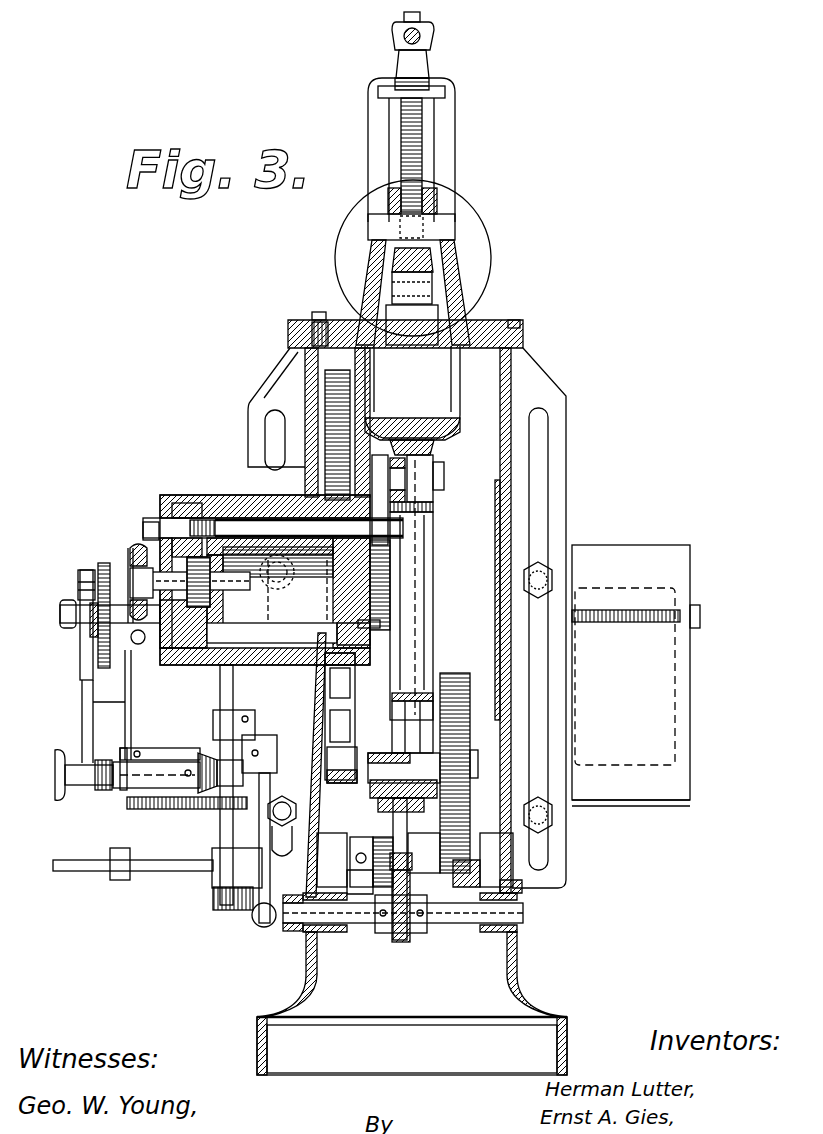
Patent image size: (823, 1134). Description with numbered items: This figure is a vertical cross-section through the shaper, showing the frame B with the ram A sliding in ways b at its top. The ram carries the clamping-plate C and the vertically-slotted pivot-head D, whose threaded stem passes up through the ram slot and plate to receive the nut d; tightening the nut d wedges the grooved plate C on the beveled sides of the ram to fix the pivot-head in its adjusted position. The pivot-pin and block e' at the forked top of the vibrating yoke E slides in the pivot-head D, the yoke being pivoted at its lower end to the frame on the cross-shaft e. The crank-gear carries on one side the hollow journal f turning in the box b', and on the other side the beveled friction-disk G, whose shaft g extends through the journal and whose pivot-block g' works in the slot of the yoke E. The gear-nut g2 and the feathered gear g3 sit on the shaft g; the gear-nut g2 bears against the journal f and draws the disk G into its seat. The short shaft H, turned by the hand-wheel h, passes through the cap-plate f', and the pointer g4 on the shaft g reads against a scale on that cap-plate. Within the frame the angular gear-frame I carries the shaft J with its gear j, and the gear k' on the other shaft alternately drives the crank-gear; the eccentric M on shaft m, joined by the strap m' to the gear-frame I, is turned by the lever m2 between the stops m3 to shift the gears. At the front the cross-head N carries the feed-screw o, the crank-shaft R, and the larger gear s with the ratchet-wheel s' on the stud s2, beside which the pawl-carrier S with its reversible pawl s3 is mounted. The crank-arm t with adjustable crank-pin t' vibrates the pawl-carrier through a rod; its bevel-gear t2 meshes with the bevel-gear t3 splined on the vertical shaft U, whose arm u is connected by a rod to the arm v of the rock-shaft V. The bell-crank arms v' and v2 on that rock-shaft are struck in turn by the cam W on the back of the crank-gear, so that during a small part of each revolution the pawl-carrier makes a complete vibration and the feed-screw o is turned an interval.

The nut d is at (388, 206).
The clamping-plate C is at (450, 216).
The ram A is at (366, 272).
The pivot-head D is at (440, 264).
The pivot-pin and block e' is at (412, 288).
The ways b is at (407, 318).
The frame B is at (285, 990).
The pivot-block g' is at (417, 453).
The shaft g is at (273, 454).
The gear-nut g2 is at (200, 518).
The gear g3 is at (180, 503).
The index or pointer g4 is at (150, 520).
The tubular journal f is at (265, 481).
The vertical shaft U is at (200, 702).
The short shaft H is at (130, 576).
The hand-wheel h is at (134, 548).
The gear k' is at (216, 590).
The box b' is at (287, 762).
The pawl-carrier S is at (80, 588).
The gear s is at (109, 615).
The reversible pawl s3 is at (88, 568).
The stud s2 is at (60, 616).
The ratchet-wheel s' is at (78, 626).
The cross-head N is at (386, 675).
The feed-screw o is at (700, 616).
The cap-plate f' is at (138, 705).
The crank-arm t is at (172, 768).
The adjustable crank-pin t' is at (84, 783).
The bevel-gear t2 is at (185, 748).
The bevel-gear t3 is at (208, 752).
The rock-shaft V is at (262, 740).
The arm v is at (268, 826).
The crank-shaft R is at (145, 858).
The shaft J is at (212, 840).
The arm u is at (235, 912).
The cam W is at (355, 662).
The bell-crank arm v' is at (340, 688).
The bell-crank arm v2 is at (341, 726).
The sleeve F' is at (395, 724).
The gear j is at (452, 674).
The gear-frame I is at (352, 790).
The strap m' is at (386, 869).
The cross-shaft e is at (360, 885).
The eccentric-shaft m is at (403, 929).
The eccentric M is at (390, 935).
The lever m2 is at (285, 925).
The stops m3 is at (298, 932).
The friction-disk G is at (411, 590).
The vibrating yoke E is at (436, 622).